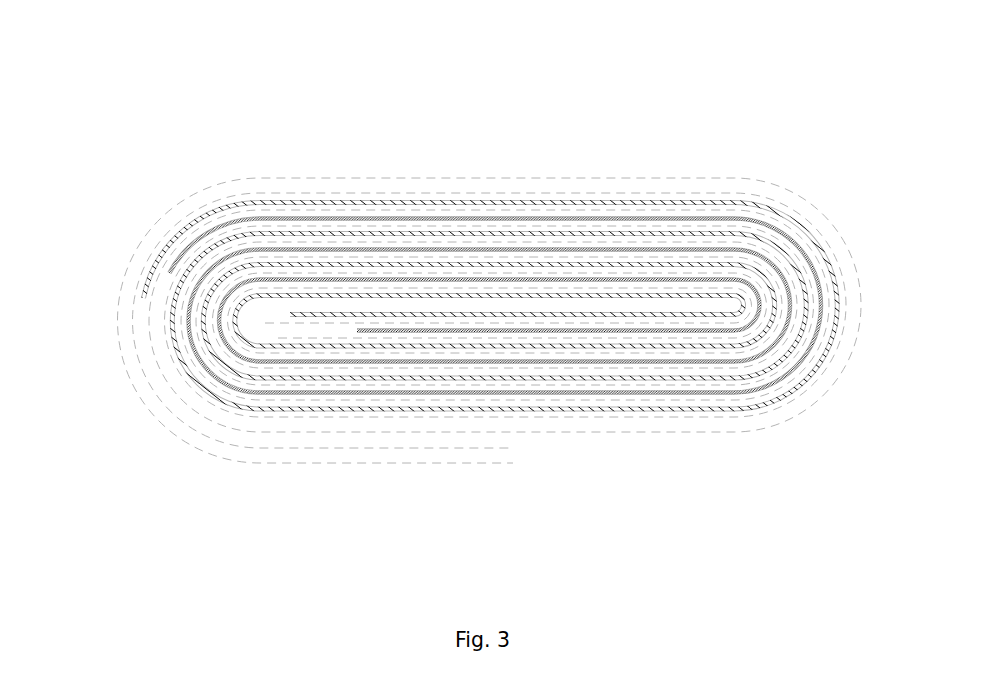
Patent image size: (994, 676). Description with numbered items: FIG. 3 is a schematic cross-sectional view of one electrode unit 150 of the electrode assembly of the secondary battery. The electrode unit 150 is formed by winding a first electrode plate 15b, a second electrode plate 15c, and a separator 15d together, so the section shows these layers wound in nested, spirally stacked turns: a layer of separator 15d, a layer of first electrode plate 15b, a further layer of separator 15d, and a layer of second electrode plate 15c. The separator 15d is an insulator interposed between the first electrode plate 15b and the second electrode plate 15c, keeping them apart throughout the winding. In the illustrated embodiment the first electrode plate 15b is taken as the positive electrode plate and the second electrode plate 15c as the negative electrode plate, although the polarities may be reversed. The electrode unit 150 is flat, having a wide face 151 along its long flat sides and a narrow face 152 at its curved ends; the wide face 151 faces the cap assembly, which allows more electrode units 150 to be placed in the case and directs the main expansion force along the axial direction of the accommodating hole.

The electrode unit 150 is at (557, 53).
The wide face 151 is at (85, 372).
The narrow face 152 is at (550, 122).
The first electrode plate 15b is at (360, 332).
The second electrode plate 15c is at (315, 317).
The separator 15d is at (265, 323).